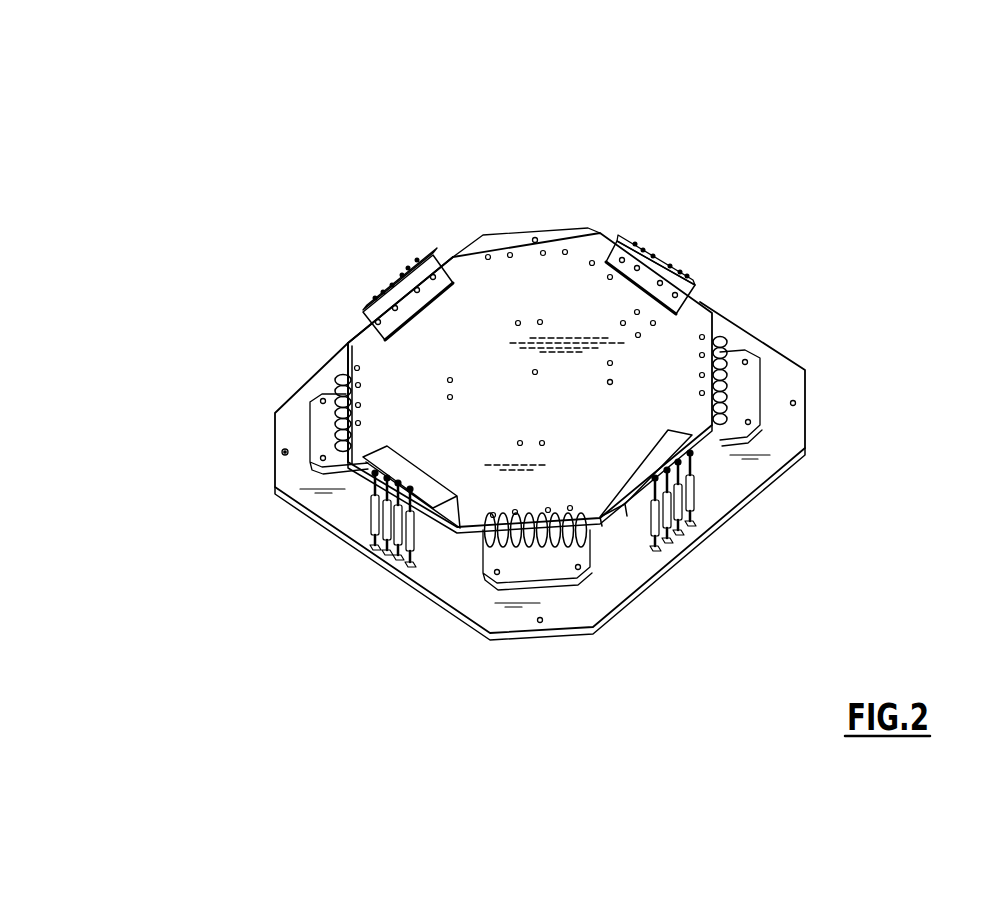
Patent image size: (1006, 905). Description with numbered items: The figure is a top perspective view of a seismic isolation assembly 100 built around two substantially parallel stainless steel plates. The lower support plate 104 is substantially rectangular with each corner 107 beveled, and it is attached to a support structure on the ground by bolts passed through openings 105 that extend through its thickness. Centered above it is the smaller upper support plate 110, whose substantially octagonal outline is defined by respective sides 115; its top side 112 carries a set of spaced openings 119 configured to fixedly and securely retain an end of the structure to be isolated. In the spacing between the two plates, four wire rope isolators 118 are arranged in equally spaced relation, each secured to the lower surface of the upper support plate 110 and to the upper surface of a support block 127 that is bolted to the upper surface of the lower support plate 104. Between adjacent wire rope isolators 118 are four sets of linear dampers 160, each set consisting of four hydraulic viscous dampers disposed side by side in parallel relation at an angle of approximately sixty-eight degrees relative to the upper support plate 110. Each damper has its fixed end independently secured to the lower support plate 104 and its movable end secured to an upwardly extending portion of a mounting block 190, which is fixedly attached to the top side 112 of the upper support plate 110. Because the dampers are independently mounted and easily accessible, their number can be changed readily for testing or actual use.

The seismic isolation assembly 100 is at (323, 87).
The lower support plate 104 is at (593, 600).
The openings 105 is at (282, 452).
The corner 107 is at (505, 236).
The upper support plate 110 is at (588, 258).
The top side 112 is at (525, 285).
The sides 115 is at (453, 253).
The wire rope isolator 118 is at (340, 395).
The openings 119 is at (611, 386).
The support block 127 is at (310, 432).
The linear damper 160 is at (375, 515).
The mounting block 190 is at (666, 262).